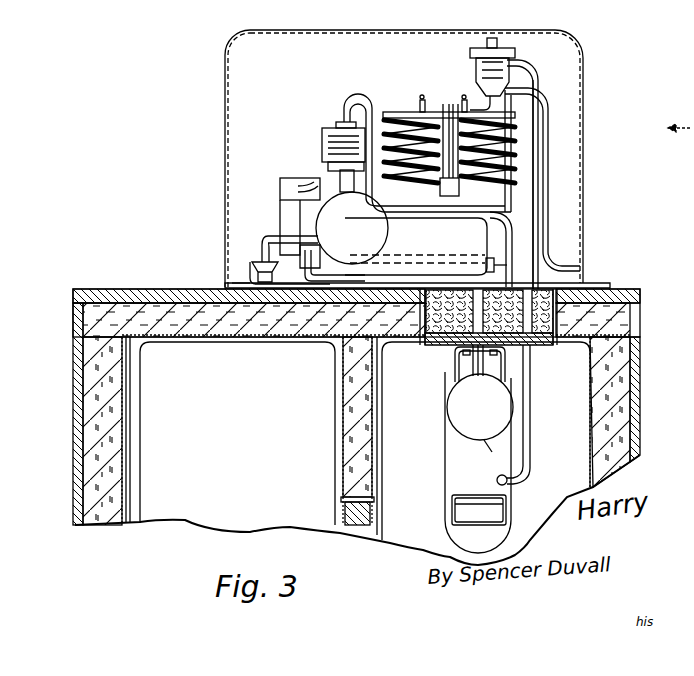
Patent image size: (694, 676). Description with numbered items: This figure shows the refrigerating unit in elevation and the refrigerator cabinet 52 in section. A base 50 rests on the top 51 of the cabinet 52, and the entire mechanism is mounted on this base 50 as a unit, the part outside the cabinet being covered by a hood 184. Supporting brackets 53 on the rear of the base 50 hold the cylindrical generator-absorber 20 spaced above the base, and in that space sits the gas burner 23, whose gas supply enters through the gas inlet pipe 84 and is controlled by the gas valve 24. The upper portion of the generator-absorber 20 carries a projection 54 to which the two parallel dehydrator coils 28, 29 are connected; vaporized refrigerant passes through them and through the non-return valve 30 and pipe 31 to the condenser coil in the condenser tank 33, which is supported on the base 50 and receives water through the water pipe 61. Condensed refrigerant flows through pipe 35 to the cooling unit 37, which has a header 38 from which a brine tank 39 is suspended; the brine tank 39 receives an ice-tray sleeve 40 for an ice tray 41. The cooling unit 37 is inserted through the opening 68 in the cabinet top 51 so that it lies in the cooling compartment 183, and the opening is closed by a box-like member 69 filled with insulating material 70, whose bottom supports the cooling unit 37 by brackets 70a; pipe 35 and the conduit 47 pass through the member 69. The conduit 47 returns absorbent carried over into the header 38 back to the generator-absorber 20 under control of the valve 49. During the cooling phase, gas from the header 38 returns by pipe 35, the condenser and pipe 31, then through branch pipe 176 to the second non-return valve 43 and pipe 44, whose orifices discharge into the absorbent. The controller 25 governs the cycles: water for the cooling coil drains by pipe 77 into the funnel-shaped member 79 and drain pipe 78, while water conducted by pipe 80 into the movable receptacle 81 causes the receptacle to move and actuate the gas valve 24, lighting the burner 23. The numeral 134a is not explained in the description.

The hood 184 is at (584, 70).
The top of the refrigerator cabinet 51 is at (110, 289).
The opening 68 is at (598, 292).
The refrigerator cabinet 52 is at (75, 428).
The cooling compartment 183 is at (592, 400).
The gas valve 24 is at (286, 268).
The cooling unit 37 is at (483, 438).
The pipe 35 is at (529, 316).
The conduit 47 is at (476, 376).
The header 38 is at (485, 453).
The brine tank 39 is at (444, 497).
The ice-tray sleeve 40 is at (509, 494).
The ice tray 41 is at (500, 515).
The box-like member 69 is at (432, 342).
The brackets 70a is at (416, 400).
The insulating material 70 is at (526, 300).
The supporting brackets 53 is at (366, 244).
The pipe 44 is at (458, 242).
The gas burner 23 is at (497, 266).
The controller 25 is at (328, 139).
The pipe 134a is at (357, 100).
The dehydrator coil 29 is at (513, 188).
The condenser tank 33 is at (514, 214).
The dehydrator coil 28 is at (416, 184).
The projection 54 is at (448, 190).
The non-return valve 30 is at (418, 114).
The pipe 31 is at (436, 105).
The branch pipe 176 is at (455, 112).
The valve 49 is at (478, 74).
The non-return valve 43 is at (540, 110).
The water pipe 61 is at (549, 140).
The generator-absorber 20 is at (512, 235).
The movable receptacle 81 is at (280, 207).
The pipe 80 is at (300, 178).
The pipe 77 is at (266, 242).
The funnel-shaped member 79 is at (256, 266).
The gas inlet pipe 84 is at (322, 282).
The drain pipe 78 is at (262, 283).
The base 50 is at (230, 283).